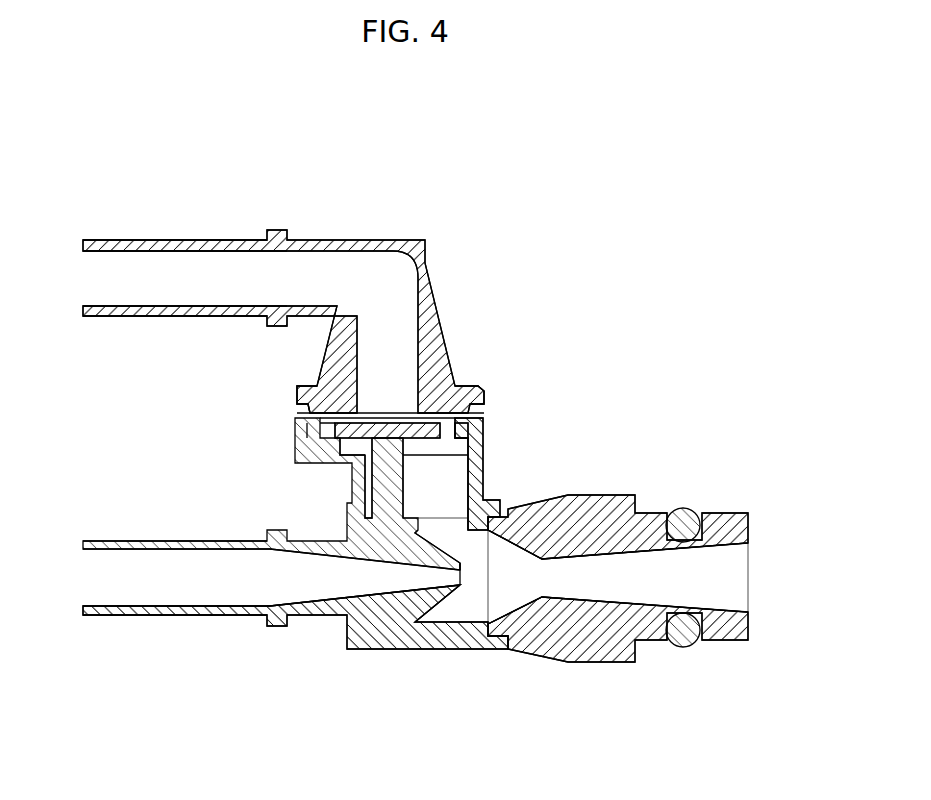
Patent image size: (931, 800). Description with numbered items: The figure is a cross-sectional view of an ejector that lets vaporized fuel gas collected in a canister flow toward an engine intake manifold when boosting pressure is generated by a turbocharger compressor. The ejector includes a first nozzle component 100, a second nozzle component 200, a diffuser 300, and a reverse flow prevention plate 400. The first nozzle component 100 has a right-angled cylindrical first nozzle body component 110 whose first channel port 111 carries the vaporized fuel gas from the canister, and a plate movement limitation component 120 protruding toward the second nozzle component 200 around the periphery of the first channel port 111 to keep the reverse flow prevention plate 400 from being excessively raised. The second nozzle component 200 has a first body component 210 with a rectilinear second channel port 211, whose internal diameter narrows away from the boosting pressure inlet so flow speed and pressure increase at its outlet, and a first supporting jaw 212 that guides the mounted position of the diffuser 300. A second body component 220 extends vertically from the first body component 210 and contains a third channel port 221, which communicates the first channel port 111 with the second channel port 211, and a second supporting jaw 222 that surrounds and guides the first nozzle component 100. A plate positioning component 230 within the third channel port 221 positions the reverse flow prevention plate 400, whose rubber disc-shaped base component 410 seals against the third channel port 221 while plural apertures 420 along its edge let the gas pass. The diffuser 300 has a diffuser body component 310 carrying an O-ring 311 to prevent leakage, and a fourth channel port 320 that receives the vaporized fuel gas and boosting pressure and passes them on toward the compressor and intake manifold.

The first nozzle component 100 is at (224, 203).
The first nozzle body component 110 is at (362, 306).
The first channel port 111 is at (162, 265).
The plate movement limitation component 120 is at (293, 425).
The second nozzle component 200 is at (400, 673).
The first body component 210 is at (313, 607).
The second channel port 211 is at (150, 568).
The first supporting jaw 212 is at (505, 648).
The second body component 220 is at (478, 460).
The third channel port 221 is at (455, 487).
The second supporting jaw 222 is at (486, 398).
The plate positioning component 230 is at (353, 482).
The diffuser 300 is at (712, 678).
The diffuser body component 310 is at (597, 648).
The O-ring 311 is at (687, 520).
The fourth channel port 320 is at (606, 569).
The reverse flow prevention plate 400 is at (493, 232).
The base component 410 is at (393, 430).
The aperture 420 is at (447, 430).